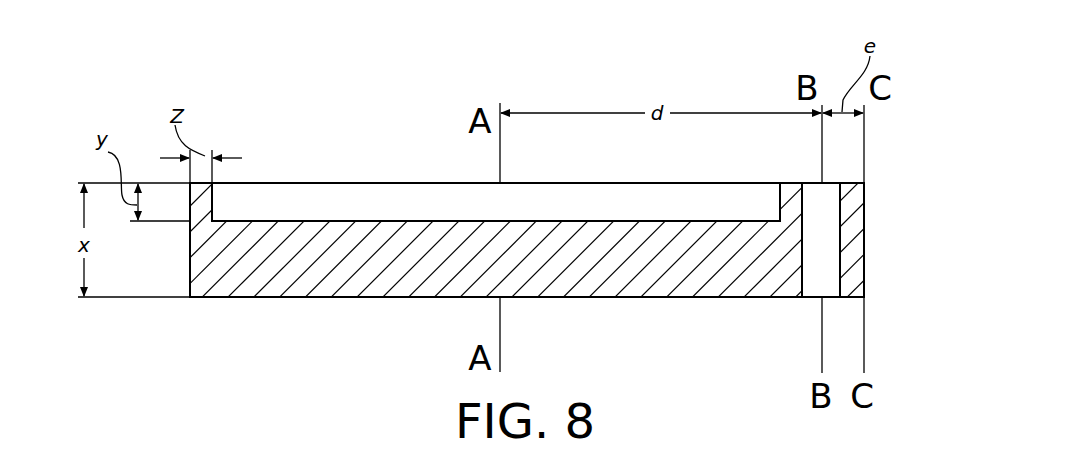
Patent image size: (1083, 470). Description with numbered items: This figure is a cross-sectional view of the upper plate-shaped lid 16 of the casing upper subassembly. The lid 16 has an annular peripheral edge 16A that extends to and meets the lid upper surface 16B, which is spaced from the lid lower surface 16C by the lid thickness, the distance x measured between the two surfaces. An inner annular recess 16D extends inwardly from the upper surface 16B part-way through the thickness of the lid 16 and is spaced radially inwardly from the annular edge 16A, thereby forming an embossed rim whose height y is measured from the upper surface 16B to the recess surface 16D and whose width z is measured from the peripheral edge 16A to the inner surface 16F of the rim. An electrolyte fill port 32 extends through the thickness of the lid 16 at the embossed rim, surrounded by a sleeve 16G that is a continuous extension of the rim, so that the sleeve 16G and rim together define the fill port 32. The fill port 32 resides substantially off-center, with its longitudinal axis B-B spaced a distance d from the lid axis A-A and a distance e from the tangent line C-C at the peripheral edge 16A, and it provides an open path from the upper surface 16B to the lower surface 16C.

The upper plate-shaped lid 16 is at (825, 72).
The annular peripheral edge 16A is at (864, 240).
The lid upper surface 16B is at (852, 183).
The lid lower surface 16C is at (343, 298).
The inner annular recess 16D is at (322, 220).
The inner surface of the rim 16F is at (215, 200).
The sleeve 16G is at (789, 183).
The electrolyte fill opening or port 32 is at (808, 298).